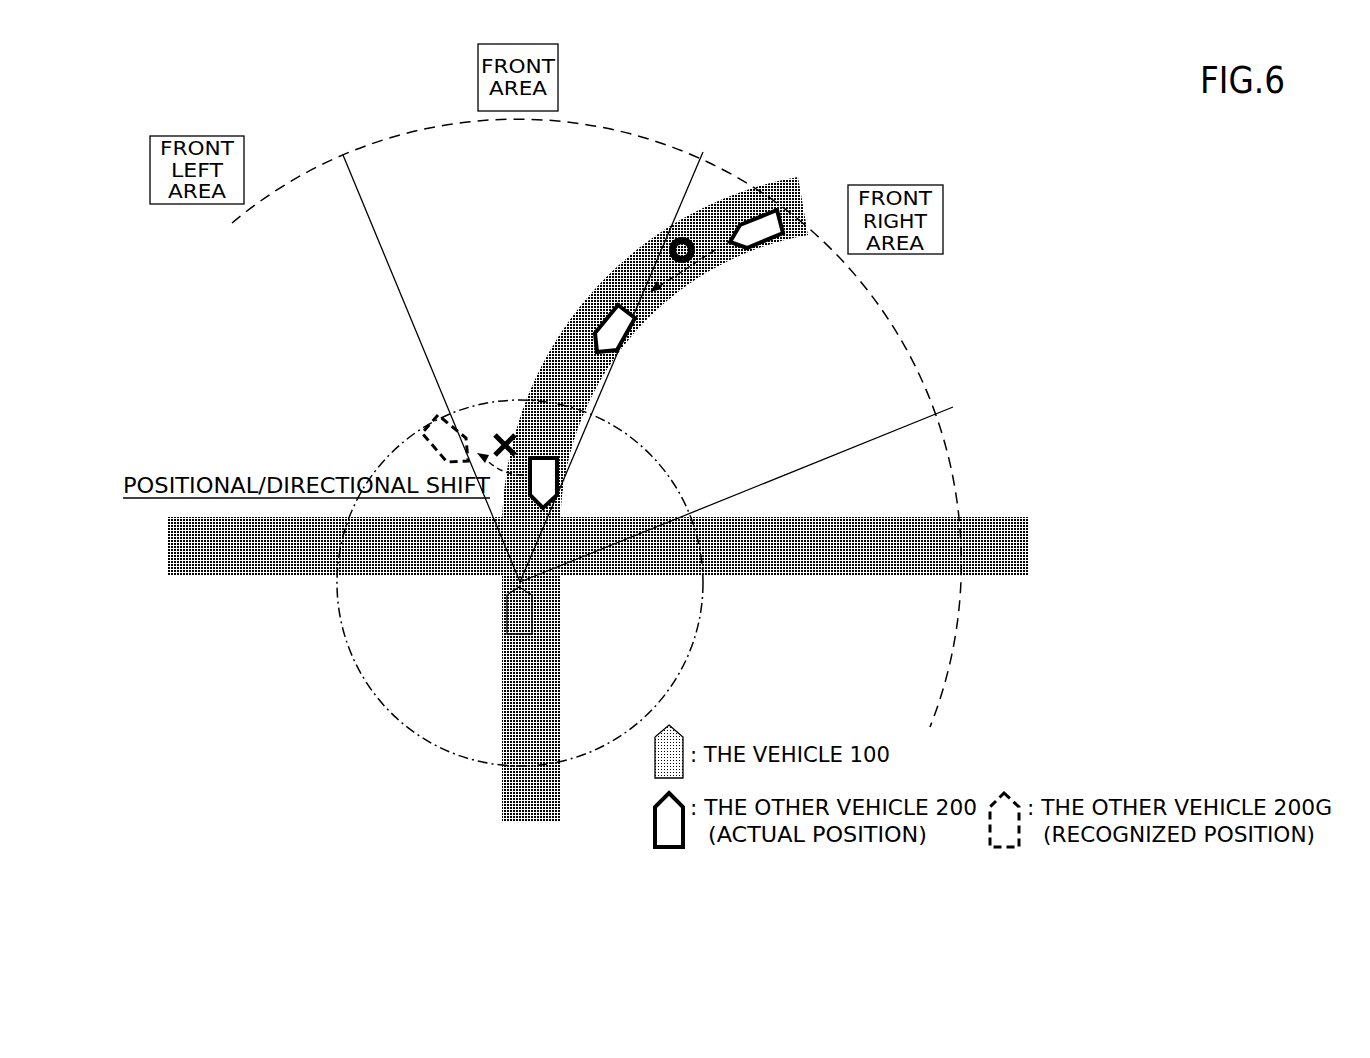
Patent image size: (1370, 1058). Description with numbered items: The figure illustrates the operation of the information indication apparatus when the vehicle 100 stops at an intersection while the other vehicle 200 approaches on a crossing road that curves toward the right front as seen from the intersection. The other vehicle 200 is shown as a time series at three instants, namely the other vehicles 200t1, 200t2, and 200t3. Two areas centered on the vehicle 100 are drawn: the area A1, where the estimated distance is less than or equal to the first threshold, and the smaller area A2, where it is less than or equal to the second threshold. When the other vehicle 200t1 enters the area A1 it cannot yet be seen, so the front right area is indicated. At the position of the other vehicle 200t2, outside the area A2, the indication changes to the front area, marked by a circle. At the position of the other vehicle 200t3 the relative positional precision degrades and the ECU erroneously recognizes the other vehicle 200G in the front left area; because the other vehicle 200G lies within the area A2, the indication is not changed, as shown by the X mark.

The vehicle 100 is at (505, 615).
The other vehicle 200 is at (646, 359).
The other vehicle at time t1 200t1 is at (781, 247).
The other vehicle at time t2 200t2 is at (597, 321).
The other vehicle at time t3 200t3 is at (558, 467).
The other vehicle as recognized by the ECU 200G is at (433, 450).
The area A1 is at (960, 618).
The area A2 is at (702, 618).